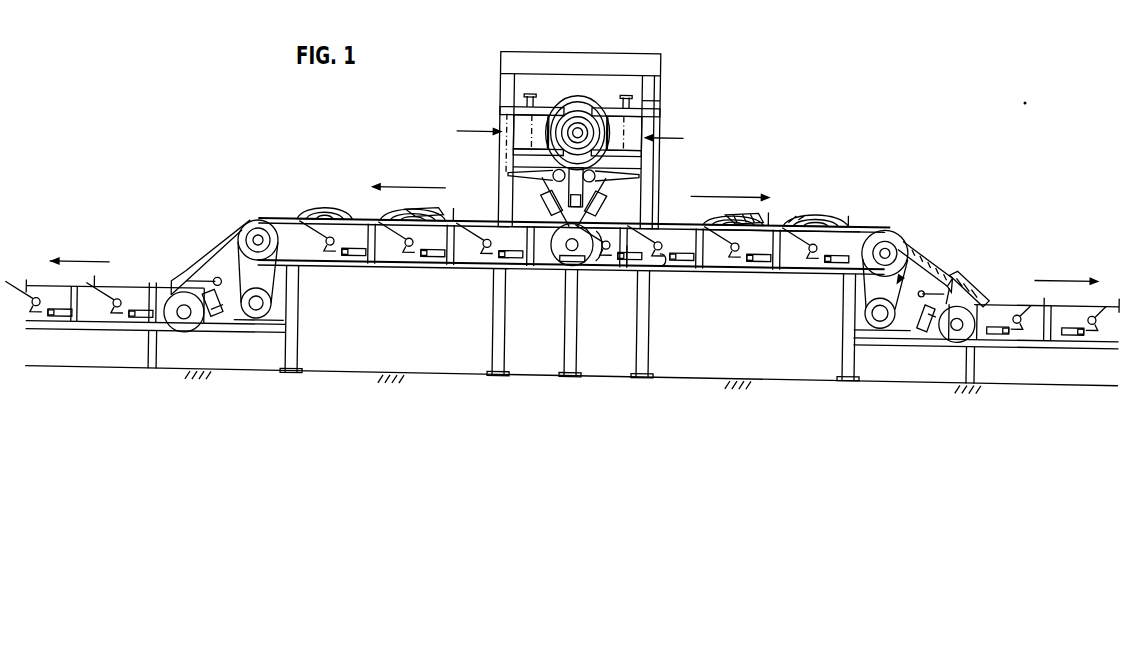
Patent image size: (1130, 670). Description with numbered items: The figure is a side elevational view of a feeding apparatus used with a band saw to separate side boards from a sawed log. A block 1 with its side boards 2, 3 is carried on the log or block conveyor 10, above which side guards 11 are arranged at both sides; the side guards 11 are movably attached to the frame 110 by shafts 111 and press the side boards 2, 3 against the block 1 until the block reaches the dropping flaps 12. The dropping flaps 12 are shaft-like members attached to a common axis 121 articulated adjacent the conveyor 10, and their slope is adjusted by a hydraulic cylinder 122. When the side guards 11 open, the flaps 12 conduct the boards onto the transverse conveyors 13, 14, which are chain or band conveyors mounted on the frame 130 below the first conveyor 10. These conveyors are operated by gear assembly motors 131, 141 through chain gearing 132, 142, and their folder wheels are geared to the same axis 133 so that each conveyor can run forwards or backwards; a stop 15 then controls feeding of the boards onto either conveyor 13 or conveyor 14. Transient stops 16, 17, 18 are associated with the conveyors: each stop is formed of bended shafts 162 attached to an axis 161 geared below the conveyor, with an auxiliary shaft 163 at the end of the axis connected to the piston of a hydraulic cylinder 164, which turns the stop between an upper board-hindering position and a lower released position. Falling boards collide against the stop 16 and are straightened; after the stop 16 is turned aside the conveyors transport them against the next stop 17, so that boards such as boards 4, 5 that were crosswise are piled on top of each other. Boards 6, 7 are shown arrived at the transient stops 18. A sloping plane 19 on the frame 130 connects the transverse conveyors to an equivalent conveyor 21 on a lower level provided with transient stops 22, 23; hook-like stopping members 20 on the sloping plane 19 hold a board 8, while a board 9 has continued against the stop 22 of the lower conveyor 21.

The block 1 is at (578, 80).
The side board 2 is at (617, 100).
The side board 3 is at (640, 110).
The board 4 is at (757, 213).
The board 5 is at (818, 213).
The board 6 is at (845, 220).
The board 7 is at (887, 228).
The board 8 is at (915, 242).
The board 9 is at (968, 300).
The log or block conveyor 10 is at (510, 207).
The side guards 11 is at (638, 125).
The dropping flaps 12 is at (522, 162).
The transverse conveyor 13 is at (455, 268).
The transverse conveyor 14 is at (714, 270).
The stop 15 is at (588, 258).
The transient stop 16 is at (713, 222).
The transient stop 17 is at (746, 246).
The transient stop 18 is at (815, 250).
The sloping plane 19 is at (905, 262).
The stopping members 20 is at (950, 338).
The conveyor 21 is at (998, 345).
The transient stop 22 is at (1037, 318).
The transient stop 23 is at (1100, 318).
The frame 110 is at (537, 62).
The shafts 111 is at (512, 95).
The common axis 121 is at (515, 188).
The hydraulic cylinder 122 is at (545, 205).
The frame 130 is at (553, 352).
The gear assembly motor 131 is at (236, 295).
The chain gearing 132 is at (241, 267).
The axis 133 is at (571, 268).
The gear assembly motor 141 is at (968, 280).
The chain gearing 142 is at (931, 300).
The axis 161 is at (697, 213).
The bended shafts 162 is at (663, 252).
The auxiliary shaft 163 is at (671, 250).
The hydraulic cylinder 164 is at (640, 256).